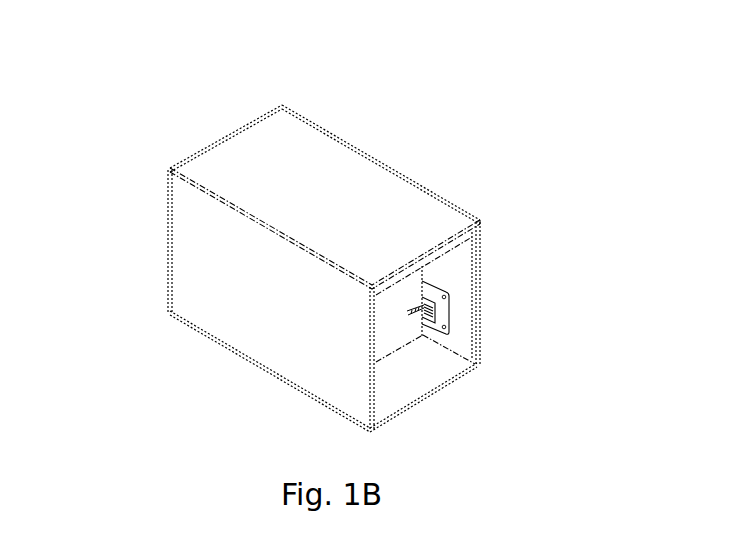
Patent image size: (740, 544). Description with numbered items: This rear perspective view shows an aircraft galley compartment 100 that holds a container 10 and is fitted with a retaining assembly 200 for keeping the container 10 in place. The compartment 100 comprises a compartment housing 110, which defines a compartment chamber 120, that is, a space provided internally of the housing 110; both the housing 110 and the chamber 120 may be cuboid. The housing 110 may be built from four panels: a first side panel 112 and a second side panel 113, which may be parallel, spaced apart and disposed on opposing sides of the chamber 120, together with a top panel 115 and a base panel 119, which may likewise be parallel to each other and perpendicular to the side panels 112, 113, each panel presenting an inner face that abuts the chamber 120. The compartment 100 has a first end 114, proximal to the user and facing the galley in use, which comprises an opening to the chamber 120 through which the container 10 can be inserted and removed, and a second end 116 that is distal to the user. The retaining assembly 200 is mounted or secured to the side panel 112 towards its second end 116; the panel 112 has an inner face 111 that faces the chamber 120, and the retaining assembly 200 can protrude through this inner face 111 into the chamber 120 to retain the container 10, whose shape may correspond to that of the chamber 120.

The container 10 is at (387, 343).
The aircraft galley compartment 100 is at (360, 173).
The compartment housing 110 is at (258, 152).
The inner face 111 is at (462, 327).
The side panel 112 is at (445, 258).
The side panel 113 is at (260, 318).
The first end 114 is at (208, 123).
The top panel 115 is at (293, 207).
The second end 116 is at (497, 224).
The base panel 119 is at (282, 386).
The compartment chamber 120 is at (435, 358).
The retaining assembly 200 is at (450, 298).